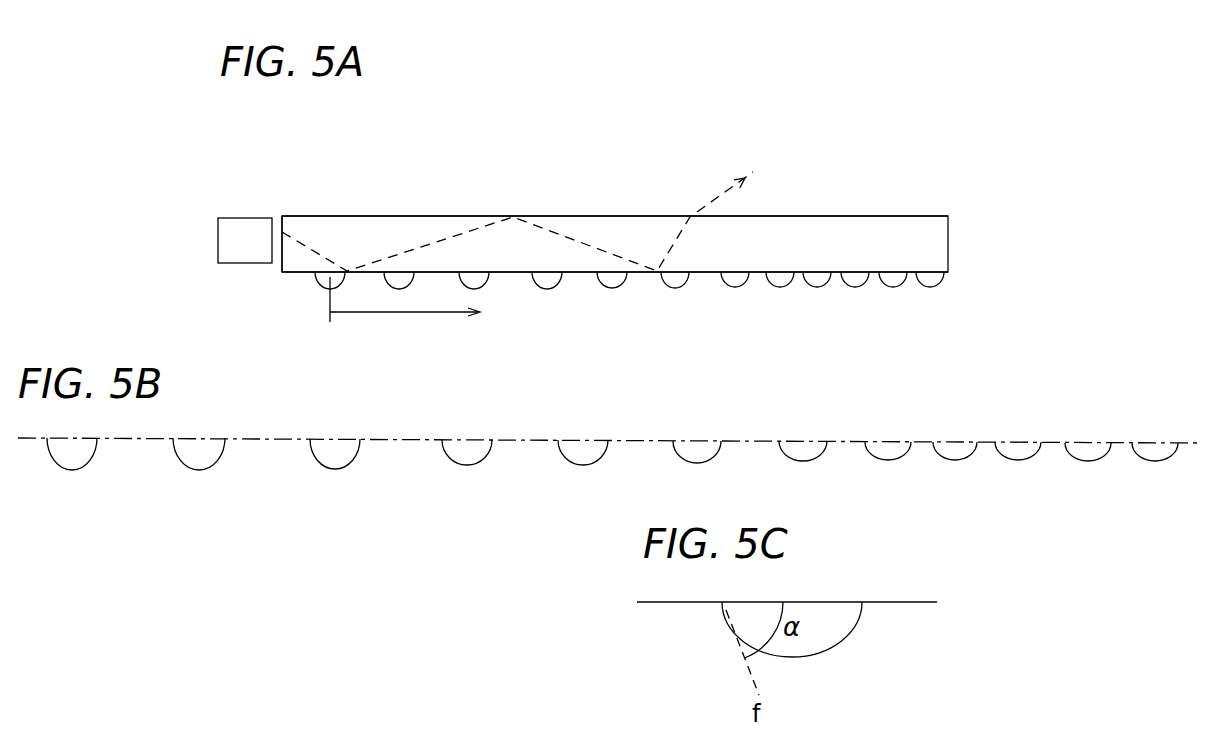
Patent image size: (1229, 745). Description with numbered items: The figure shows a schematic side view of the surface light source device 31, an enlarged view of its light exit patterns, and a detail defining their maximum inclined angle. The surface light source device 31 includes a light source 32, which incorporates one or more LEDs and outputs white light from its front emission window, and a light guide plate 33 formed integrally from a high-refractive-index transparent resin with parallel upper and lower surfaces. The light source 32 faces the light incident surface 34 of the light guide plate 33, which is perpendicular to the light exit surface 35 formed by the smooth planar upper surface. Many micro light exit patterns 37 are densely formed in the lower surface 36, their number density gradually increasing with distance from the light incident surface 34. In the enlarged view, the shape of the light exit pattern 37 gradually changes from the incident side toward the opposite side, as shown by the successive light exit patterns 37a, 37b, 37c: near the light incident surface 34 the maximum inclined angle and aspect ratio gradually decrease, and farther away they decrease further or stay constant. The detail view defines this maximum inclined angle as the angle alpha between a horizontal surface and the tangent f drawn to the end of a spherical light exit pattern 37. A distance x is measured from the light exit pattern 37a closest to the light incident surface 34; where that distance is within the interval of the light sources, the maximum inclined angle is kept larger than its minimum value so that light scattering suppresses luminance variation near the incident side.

In FIG. 5A, the surface light source device 31 is at (928, 140).
In FIG. 5A, the light source 32 is at (243, 232).
In FIG. 5A, the light guide plate 33 is at (595, 237).
In FIG. 5A, the light incident surface 34 is at (282, 250).
In FIG. 5A, the light exit surface 35 is at (452, 216).
In FIG. 5A, the lower surface 36 is at (755, 273).
In FIG. 5B, the lower surface 36 is at (609, 440).
In FIG. 5C, the lower surface 36 is at (913, 602).
In FIG. 5A, the light exit pattern 37 is at (738, 280).
In FIG. 5B, the light exit pattern 37 is at (810, 452).
In FIG. 5C, the light exit pattern 37 is at (833, 647).
In FIG. 5A, the light exit pattern 37a is at (330, 288).
In FIG. 5B, the light exit pattern 37a is at (80, 463).
In FIG. 5A, the light exit pattern 37b is at (399, 288).
In FIG. 5B, the light exit pattern 37b is at (203, 460).
In FIG. 5A, the light exit pattern 37c is at (487, 283).
In FIG. 5B, the light exit pattern 37c is at (342, 457).